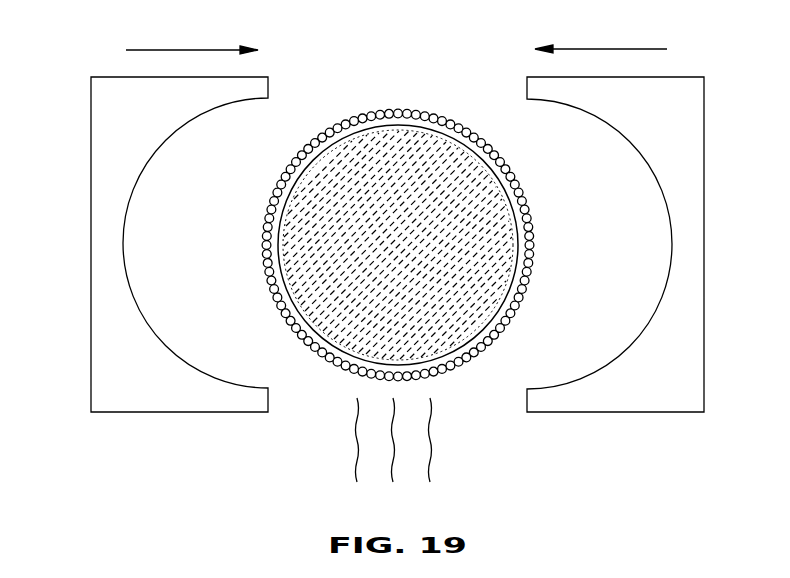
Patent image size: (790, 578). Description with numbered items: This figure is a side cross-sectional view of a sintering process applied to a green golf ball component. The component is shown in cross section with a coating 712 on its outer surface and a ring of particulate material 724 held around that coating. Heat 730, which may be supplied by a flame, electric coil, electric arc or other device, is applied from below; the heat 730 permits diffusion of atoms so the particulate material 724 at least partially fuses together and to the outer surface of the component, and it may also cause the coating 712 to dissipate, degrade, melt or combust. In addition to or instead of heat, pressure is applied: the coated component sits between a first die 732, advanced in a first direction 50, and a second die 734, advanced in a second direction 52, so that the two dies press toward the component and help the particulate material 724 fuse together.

The coating 712 is at (378, 111).
The particulate material 724 is at (509, 172).
The heat 730 is at (460, 440).
The first die 732 is at (103, 393).
The second die 734 is at (692, 97).
The first direction 50 is at (176, 49).
The second direction 52 is at (618, 50).